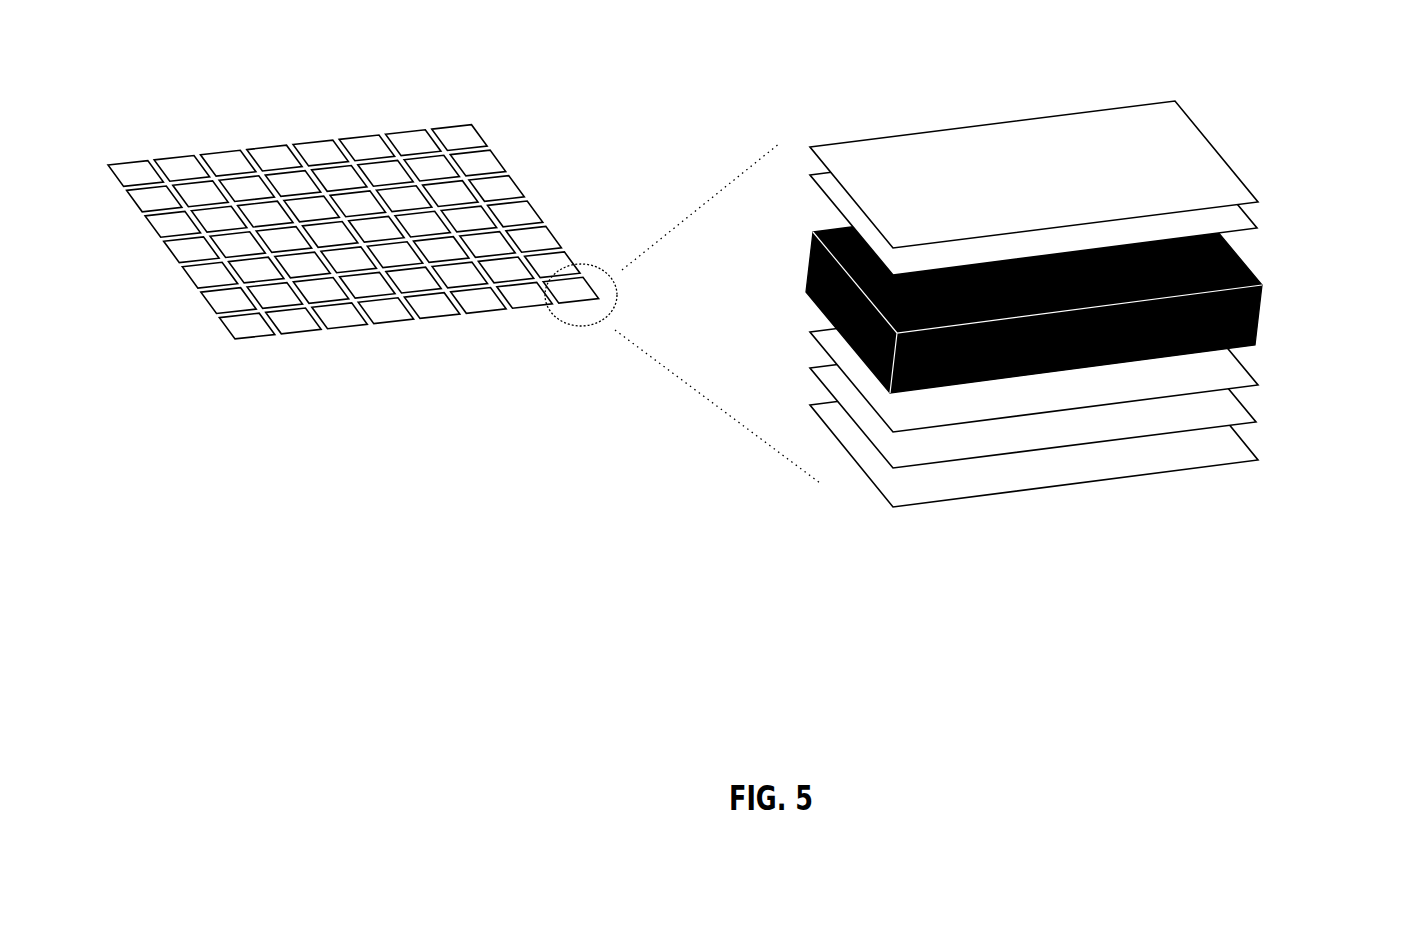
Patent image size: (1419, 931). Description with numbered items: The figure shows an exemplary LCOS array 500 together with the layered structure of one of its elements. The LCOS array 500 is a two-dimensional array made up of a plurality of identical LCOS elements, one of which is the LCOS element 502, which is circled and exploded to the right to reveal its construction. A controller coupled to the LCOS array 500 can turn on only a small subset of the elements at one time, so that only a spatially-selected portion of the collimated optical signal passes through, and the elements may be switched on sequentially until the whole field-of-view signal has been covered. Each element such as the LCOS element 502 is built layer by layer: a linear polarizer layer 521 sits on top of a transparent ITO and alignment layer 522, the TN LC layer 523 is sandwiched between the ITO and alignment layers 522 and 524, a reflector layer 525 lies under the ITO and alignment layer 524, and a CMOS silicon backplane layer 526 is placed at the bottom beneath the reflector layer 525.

The LCOS array 500 is at (107, 359).
The LCOS element 502 is at (590, 268).
The polarizer layer 521 is at (1190, 117).
The ITO & alignment layer 522 is at (1242, 223).
The TN LC layer 523 is at (1260, 310).
The ITO & alignment layer 524 is at (1243, 375).
The reflector layer 525 is at (1243, 413).
The CMOS layer 526 is at (1243, 452).